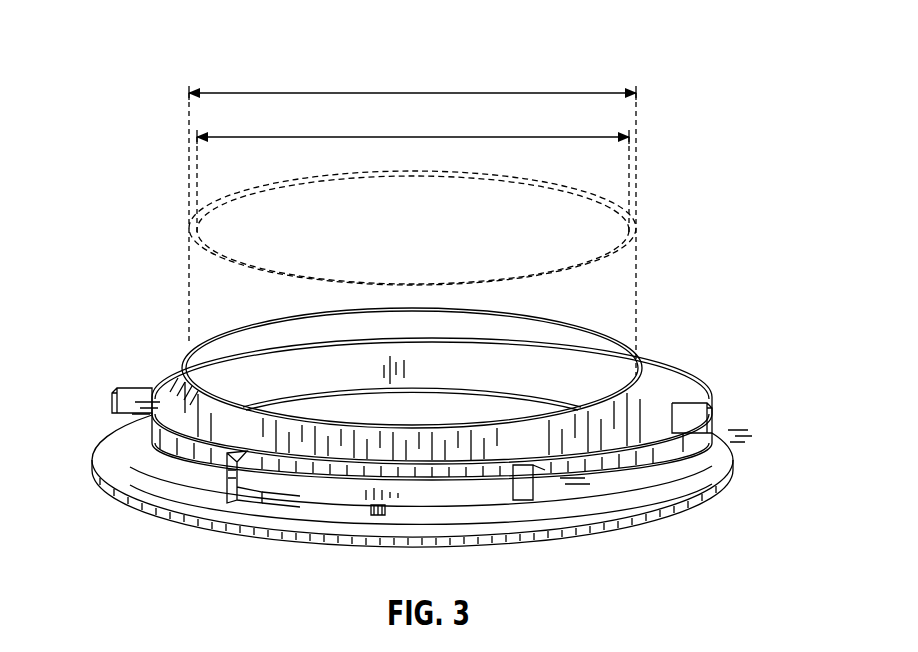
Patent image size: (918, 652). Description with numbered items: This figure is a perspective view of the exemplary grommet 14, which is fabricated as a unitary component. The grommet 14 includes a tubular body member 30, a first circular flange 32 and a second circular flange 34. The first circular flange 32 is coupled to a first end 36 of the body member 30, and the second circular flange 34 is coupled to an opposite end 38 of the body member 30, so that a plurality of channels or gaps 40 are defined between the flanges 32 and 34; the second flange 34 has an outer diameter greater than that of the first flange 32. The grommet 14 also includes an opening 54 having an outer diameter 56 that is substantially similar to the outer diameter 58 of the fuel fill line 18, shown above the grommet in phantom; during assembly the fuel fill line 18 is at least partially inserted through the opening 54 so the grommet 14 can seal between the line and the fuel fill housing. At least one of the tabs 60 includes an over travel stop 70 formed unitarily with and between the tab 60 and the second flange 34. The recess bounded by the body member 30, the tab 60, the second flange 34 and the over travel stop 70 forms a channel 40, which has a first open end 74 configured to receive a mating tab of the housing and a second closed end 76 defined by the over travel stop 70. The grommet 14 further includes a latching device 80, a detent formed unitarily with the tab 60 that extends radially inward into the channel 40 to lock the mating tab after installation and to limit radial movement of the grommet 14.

The grommet 14 is at (263, 42).
The fuel fill line 18 is at (646, 288).
The tubular body member 30 is at (535, 510).
The first circular flange 32 is at (167, 368).
The second circular flange 34 is at (657, 523).
The first end 36 is at (152, 445).
The opposite end 38 is at (160, 462).
The channel 40 is at (698, 443).
The opening 54 is at (510, 416).
The outer diameter of the opening 56 is at (440, 136).
The outer diameter of the fuel fill line 58 is at (440, 92).
The tab 60 is at (132, 381).
The over travel stop 70 is at (292, 495).
The first open end 74 is at (590, 482).
The second closed end 76 is at (237, 478).
The latching device 80 is at (372, 514).